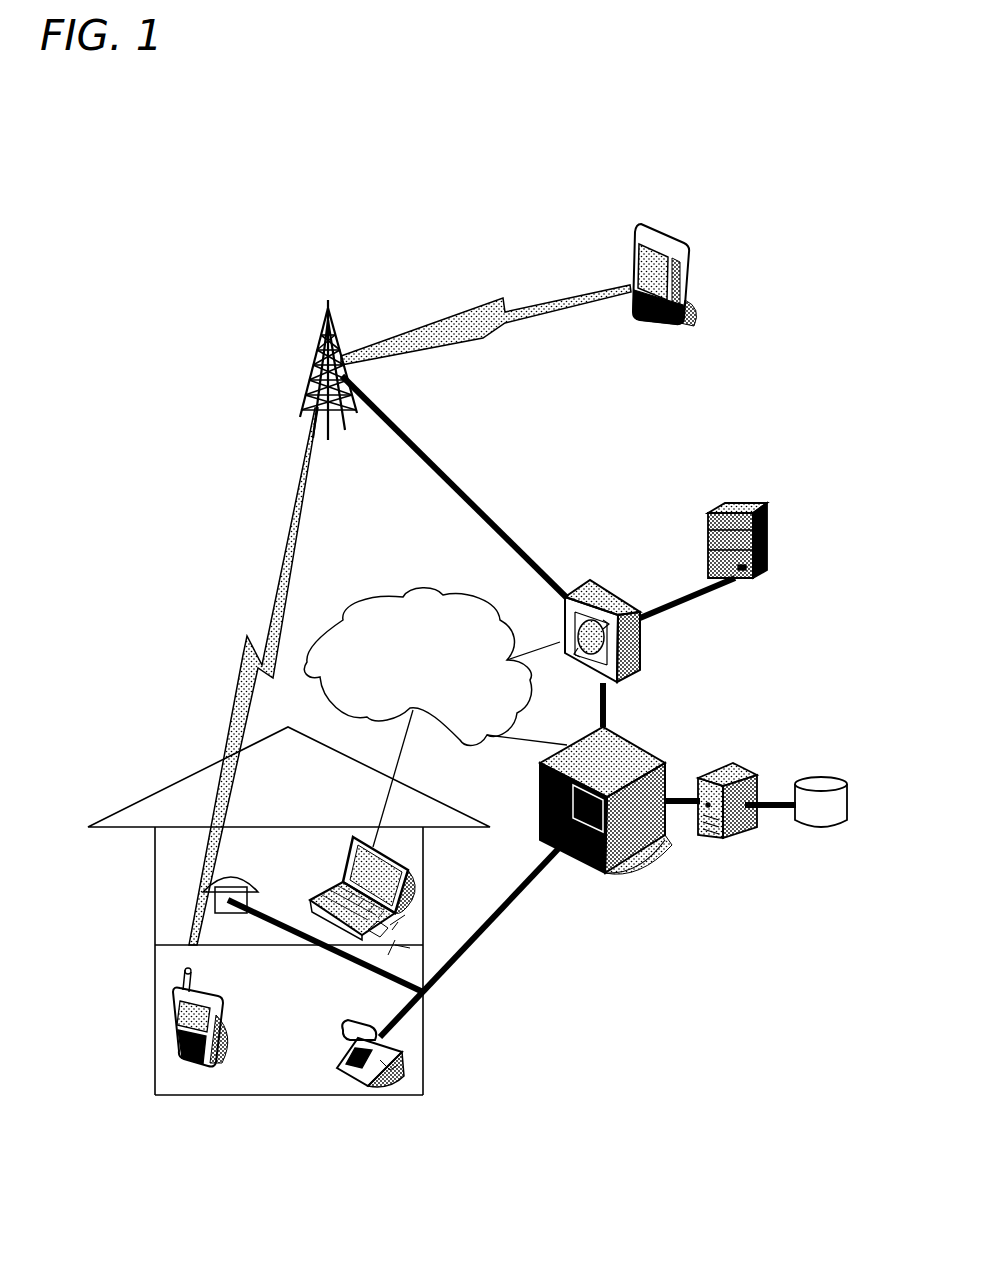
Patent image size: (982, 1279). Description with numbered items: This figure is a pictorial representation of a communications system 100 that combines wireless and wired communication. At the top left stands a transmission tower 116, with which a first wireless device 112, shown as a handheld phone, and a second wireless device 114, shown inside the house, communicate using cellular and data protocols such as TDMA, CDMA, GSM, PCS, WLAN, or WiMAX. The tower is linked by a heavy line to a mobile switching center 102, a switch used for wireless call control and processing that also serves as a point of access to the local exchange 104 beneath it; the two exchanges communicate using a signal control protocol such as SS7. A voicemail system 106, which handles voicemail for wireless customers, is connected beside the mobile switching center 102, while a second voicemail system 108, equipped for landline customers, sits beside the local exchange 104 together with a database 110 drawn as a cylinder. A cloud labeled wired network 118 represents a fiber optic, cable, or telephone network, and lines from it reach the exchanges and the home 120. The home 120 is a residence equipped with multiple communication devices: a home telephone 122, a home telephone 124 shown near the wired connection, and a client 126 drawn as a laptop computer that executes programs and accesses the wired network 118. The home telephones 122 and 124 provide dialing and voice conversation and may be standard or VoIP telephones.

The communications system 100 is at (153, 227).
The mobile switching center 102 is at (590, 582).
The local exchange 104 is at (608, 872).
The voicemail system 106 is at (728, 520).
The voicemail system 108 is at (747, 827).
The database 110 is at (822, 781).
The wireless device 112 is at (684, 243).
The wireless device 114 is at (178, 1053).
The transmission tower 116 is at (302, 413).
The wired network 118 is at (433, 692).
The home 120 is at (150, 786).
The home telephone 122 is at (400, 1067).
The home telephone 124 is at (228, 900).
The client 126 is at (410, 902).